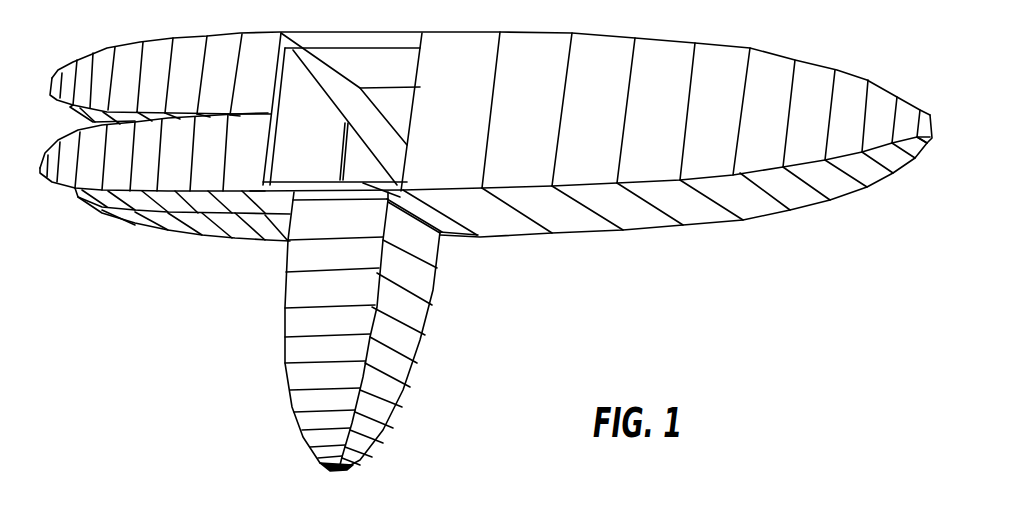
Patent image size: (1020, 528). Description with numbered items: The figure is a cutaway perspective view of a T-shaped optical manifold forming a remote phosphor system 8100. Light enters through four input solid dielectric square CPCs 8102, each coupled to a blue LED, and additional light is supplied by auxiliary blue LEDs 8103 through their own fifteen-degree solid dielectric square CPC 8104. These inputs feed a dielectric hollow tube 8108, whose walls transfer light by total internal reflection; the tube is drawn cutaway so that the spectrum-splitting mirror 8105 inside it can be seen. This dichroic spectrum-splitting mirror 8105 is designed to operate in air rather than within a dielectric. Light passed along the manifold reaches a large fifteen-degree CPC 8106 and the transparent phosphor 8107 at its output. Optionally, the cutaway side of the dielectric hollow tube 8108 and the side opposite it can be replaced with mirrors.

The remote phosphor system 8100 is at (822, 308).
The input solid dielectric square CPC 8102 is at (122, 158).
The auxiliary blue LEDs 8103 is at (330, 470).
The solid dielectric square CPC 8104 is at (405, 352).
The spectrum-splitting mirror 8105 is at (345, 98).
The large CPC 8106 is at (625, 205).
The transparent phosphor 8107 is at (923, 133).
The dielectric hollow tube 8108 is at (390, 200).